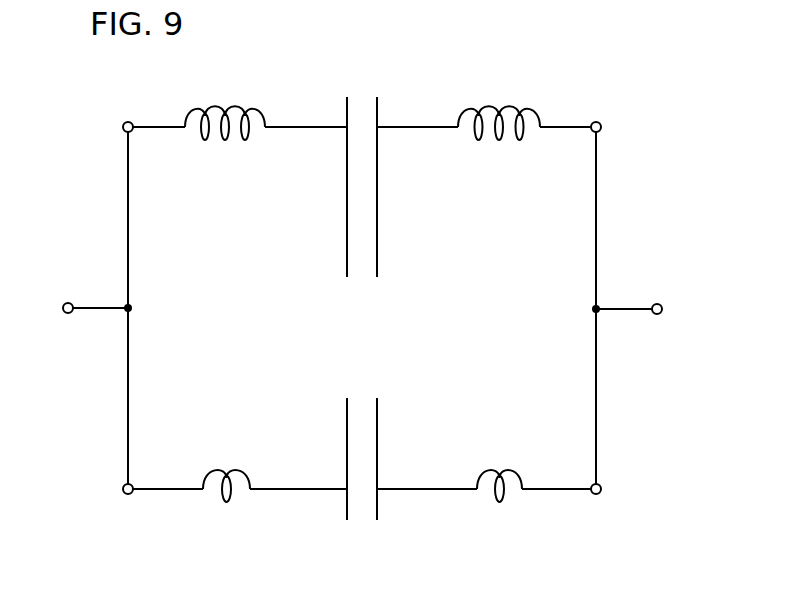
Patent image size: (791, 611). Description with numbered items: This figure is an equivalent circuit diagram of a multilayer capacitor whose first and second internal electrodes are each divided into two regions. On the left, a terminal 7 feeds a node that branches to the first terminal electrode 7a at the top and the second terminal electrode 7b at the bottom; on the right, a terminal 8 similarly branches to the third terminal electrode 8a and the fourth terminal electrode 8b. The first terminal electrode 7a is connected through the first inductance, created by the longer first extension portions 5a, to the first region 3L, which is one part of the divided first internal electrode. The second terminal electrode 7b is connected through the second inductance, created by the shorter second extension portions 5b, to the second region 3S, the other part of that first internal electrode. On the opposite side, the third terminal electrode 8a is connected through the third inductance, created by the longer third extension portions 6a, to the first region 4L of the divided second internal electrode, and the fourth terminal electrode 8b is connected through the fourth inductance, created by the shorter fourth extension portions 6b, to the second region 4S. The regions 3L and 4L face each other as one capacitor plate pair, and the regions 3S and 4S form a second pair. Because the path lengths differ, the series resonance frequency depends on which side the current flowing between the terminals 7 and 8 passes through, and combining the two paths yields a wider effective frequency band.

The terminal 7 is at (83, 307).
The first terminal electrode 7a is at (128, 111).
The second terminal electrode 7b is at (128, 506).
The terminal 8 is at (641, 308).
The third terminal electrode 8a is at (595, 111).
The fourth terminal electrode 8b is at (595, 506).
The first extension portions 5a is at (225, 126).
The second extension portions 5b is at (226, 488).
The third extension portions 6a is at (499, 126).
The fourth extension portions 6b is at (499, 488).
The first region 3L is at (347, 216).
The first region 4L is at (377, 245).
The second region 3S is at (347, 430).
The second region 4S is at (377, 417).